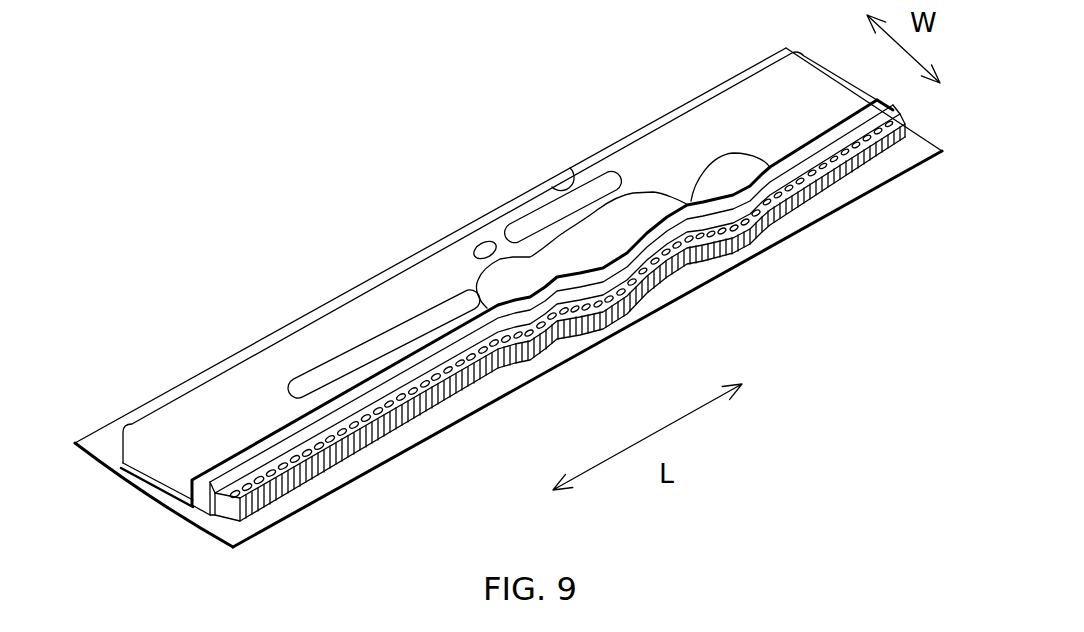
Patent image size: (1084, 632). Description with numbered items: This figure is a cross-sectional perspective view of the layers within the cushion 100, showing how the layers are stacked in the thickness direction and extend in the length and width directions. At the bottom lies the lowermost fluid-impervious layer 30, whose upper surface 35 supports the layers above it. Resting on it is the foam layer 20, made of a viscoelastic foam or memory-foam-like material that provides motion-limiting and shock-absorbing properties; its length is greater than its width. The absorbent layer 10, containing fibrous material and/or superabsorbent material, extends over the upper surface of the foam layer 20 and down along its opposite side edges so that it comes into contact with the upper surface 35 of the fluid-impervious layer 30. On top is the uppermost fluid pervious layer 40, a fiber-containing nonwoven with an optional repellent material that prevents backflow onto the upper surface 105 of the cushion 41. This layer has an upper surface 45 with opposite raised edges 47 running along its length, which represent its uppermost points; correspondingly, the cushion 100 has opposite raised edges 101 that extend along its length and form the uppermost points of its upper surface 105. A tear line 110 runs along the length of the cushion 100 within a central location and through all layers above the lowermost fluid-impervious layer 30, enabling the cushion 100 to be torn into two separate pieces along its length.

The absorbent layer 10 is at (205, 503).
The foam layer 20 is at (243, 525).
The lowermost fluid-impervious layer 30 is at (100, 452).
The upper surface of lowermost fluid-impervious layer 35 is at (108, 433).
The uppermost fluid pervious layer 40 is at (207, 412).
The cushion 41 is at (163, 418).
The upper surface of uppermost fluid pervious layer 45 is at (667, 145).
The raised edges of uppermost fluid pervious layer 47 is at (563, 179).
The cushion 100 is at (384, 234).
The raised edges of cushion 101 is at (570, 168).
The upper surface of cushion 105 is at (323, 340).
The tear line 110 is at (837, 118).